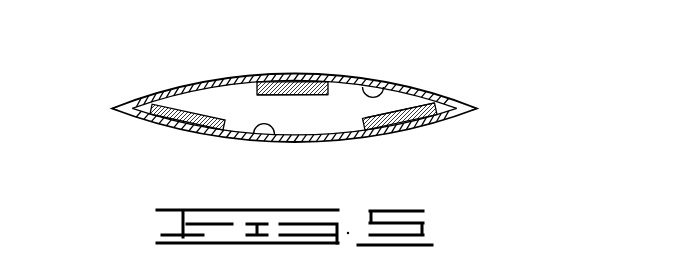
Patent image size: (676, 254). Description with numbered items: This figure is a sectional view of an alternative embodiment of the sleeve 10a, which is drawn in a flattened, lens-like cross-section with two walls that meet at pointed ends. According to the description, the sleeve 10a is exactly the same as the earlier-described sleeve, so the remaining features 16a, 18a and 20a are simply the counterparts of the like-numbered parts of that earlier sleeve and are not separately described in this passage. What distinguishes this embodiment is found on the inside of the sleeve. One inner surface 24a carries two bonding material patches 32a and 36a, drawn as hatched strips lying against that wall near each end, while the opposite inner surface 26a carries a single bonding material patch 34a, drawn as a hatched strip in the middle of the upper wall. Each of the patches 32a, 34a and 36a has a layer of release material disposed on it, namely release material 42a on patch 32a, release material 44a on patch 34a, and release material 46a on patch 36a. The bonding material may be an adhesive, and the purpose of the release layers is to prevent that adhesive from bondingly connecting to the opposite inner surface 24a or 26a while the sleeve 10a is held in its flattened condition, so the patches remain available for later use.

The sleeve 10a is at (217, 55).
The lower wall 16a is at (342, 141).
The first end 18a is at (112, 107).
The second end 20a is at (479, 109).
The inner surface 24a is at (256, 127).
The inner surface 26a is at (390, 88).
The bonding material patch 32a is at (180, 100).
The bonding material patch 34a is at (312, 80).
The bonding material patch 36a is at (405, 112).
The layer of release material 42a is at (180, 100).
The layer of release material 44a is at (297, 95).
The layer of release material 46a is at (405, 112).